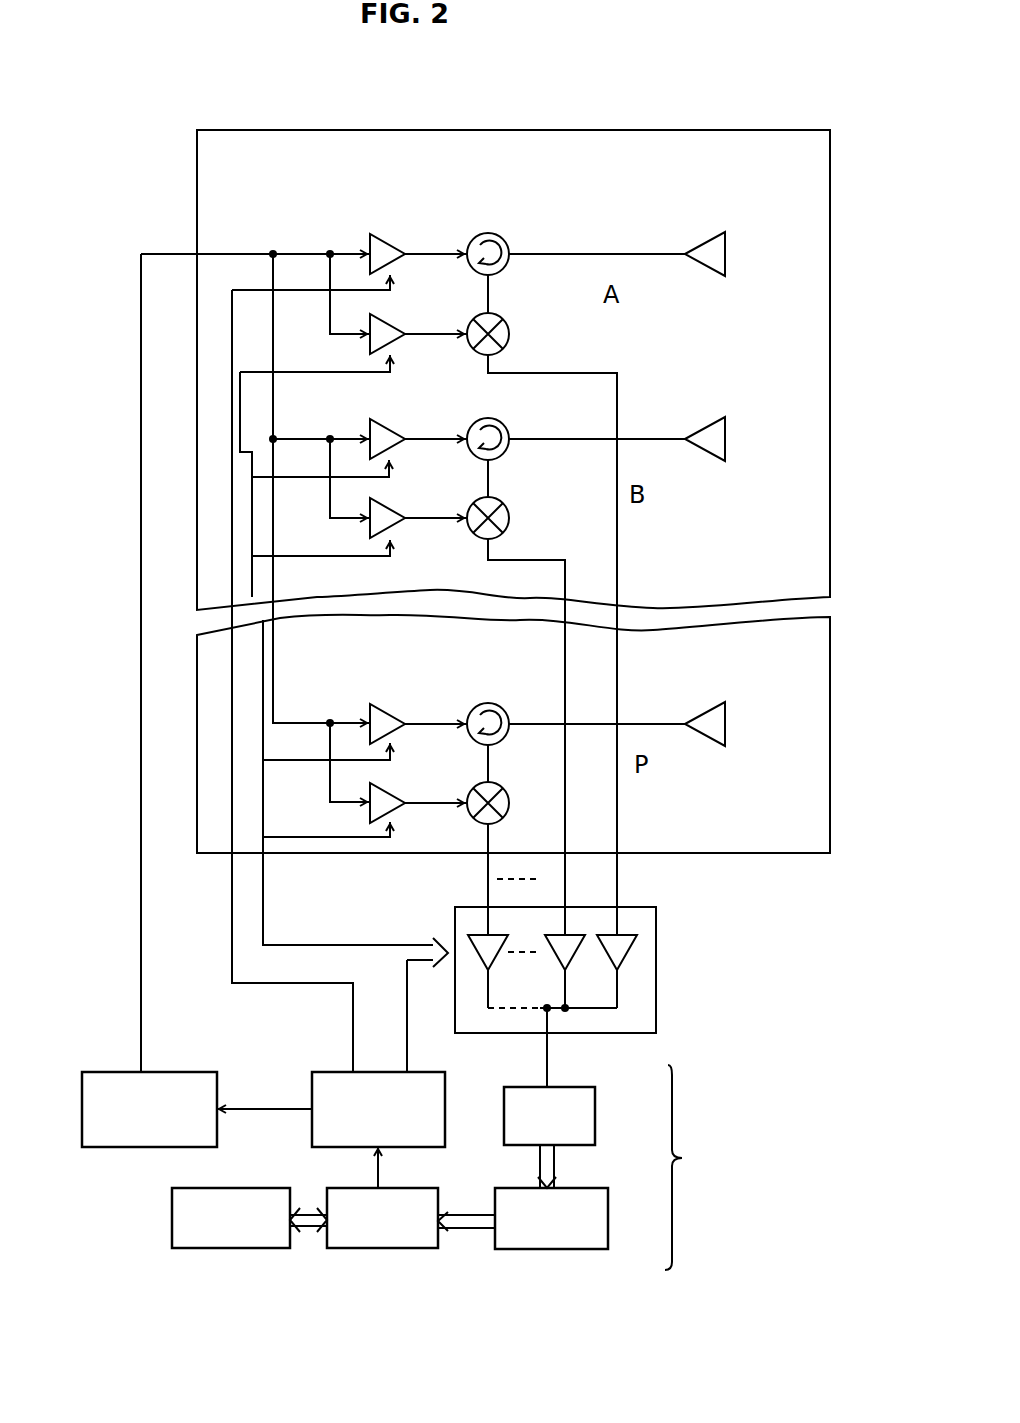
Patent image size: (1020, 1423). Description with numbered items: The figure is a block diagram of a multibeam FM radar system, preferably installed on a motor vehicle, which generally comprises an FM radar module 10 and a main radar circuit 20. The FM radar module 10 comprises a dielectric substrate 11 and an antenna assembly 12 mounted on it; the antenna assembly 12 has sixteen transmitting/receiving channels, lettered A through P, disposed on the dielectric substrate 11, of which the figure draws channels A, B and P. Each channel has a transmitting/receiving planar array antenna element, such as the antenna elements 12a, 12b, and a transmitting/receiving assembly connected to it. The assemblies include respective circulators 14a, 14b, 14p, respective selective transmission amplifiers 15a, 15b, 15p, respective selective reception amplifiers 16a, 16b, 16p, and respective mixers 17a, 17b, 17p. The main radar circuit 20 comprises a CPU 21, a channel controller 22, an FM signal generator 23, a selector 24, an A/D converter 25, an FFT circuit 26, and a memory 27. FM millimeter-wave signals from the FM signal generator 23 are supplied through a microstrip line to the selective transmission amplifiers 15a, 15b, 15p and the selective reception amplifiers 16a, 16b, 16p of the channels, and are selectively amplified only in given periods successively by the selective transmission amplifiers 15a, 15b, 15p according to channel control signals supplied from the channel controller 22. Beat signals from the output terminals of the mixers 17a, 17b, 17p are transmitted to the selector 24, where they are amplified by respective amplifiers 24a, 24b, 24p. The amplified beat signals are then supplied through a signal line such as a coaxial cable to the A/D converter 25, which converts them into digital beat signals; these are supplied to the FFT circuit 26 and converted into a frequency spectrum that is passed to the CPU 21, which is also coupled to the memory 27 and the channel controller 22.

The FM radar module 10 is at (358, 124).
The dielectric substrate 11 is at (663, 840).
The antenna assembly 12 is at (716, 712).
The transmitting/receiving planar array antenna element 12a is at (716, 240).
The transmitting/receiving planar array antenna element 12b is at (718, 425).
The circulator 14a is at (503, 245).
The circulator 14b is at (505, 425).
The circulator 14p is at (500, 708).
The selective transmission amplifier 15a is at (383, 267).
The selective transmission amplifier 15b is at (388, 452).
The selective transmission amplifier 15p is at (386, 722).
The selective reception amplifier 16a is at (383, 332).
The selective reception amplifier 16b is at (385, 518).
The selective reception amplifier 16p is at (386, 796).
The mixer 17a is at (492, 322).
The mixer 17b is at (498, 512).
The mixer 17p is at (500, 796).
The main radar circuit 20 is at (733, 1176).
The CPU 21 is at (390, 1248).
The channel controller 22 is at (338, 1072).
The FM signal generator 23 is at (195, 1072).
The selector 24 is at (643, 1005).
The amplifier 24a is at (622, 948).
The amplifier 24b is at (565, 955).
The amplifier 24p is at (453, 917).
The A/D converter 25 is at (577, 1087).
The FFT circuit 26 is at (592, 1188).
The memory 27 is at (172, 1232).